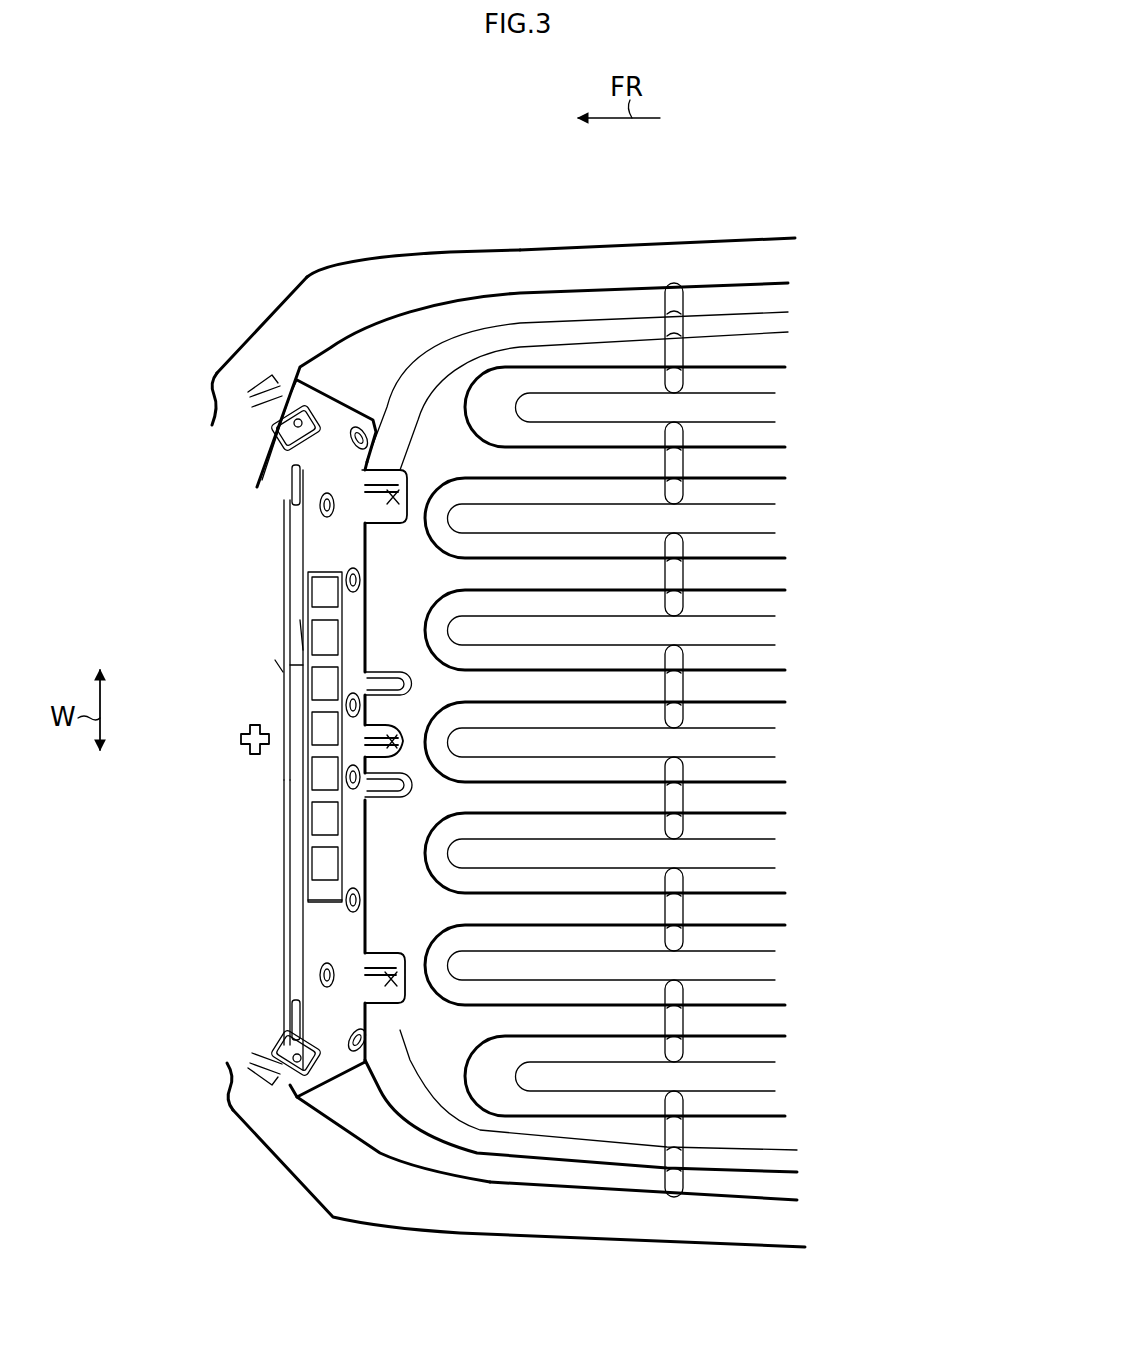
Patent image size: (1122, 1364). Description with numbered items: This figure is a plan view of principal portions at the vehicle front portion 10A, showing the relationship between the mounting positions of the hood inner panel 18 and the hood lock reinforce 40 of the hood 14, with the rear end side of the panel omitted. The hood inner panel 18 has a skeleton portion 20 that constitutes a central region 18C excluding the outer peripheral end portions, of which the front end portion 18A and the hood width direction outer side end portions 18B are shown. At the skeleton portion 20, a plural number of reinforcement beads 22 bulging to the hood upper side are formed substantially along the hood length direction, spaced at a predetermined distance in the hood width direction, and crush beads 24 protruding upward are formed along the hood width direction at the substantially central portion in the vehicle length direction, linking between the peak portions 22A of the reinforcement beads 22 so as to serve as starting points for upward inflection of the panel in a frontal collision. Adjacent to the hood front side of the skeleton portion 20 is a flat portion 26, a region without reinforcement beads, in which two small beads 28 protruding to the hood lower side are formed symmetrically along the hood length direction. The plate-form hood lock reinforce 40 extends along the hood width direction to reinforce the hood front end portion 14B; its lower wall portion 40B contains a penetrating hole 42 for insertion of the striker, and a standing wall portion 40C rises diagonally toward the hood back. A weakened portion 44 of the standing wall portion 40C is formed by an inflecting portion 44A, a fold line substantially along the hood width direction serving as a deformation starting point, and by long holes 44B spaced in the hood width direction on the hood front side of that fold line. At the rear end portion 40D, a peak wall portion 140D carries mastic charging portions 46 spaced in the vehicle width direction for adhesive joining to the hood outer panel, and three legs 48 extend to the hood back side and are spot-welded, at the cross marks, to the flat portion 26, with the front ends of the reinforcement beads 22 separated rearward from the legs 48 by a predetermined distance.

The vehicle front portion 10A is at (487, 176).
The hood 14 is at (423, 198).
The hood front end portion 14B is at (340, 243).
The hood inner panel 18 is at (582, 229).
The front end portion 18A is at (333, 1109).
The hood width direction outer side end portions 18B is at (640, 250).
The central region 18C is at (663, 742).
The skeleton portion 20 is at (655, 742).
The reinforcement beads 22 is at (788, 432).
The peak portions 22A is at (742, 404).
The crush beads 24 is at (678, 345).
The flat portion 26 is at (330, 830).
The small beads 28 is at (375, 671).
The hood lock reinforce 40 is at (347, 382).
The lower wall portion 40B is at (275, 665).
The standing wall portion 40C is at (298, 636).
The rear end portion 40D is at (348, 482).
The peak wall portion 140D is at (293, 664).
The penetrating hole 42 is at (242, 742).
The weakened portion 44 is at (314, 656).
The inflecting portion 44A is at (286, 522).
The long holes 44B is at (290, 792).
The mastic charging portions 46 is at (350, 572).
The legs 48 is at (408, 478).